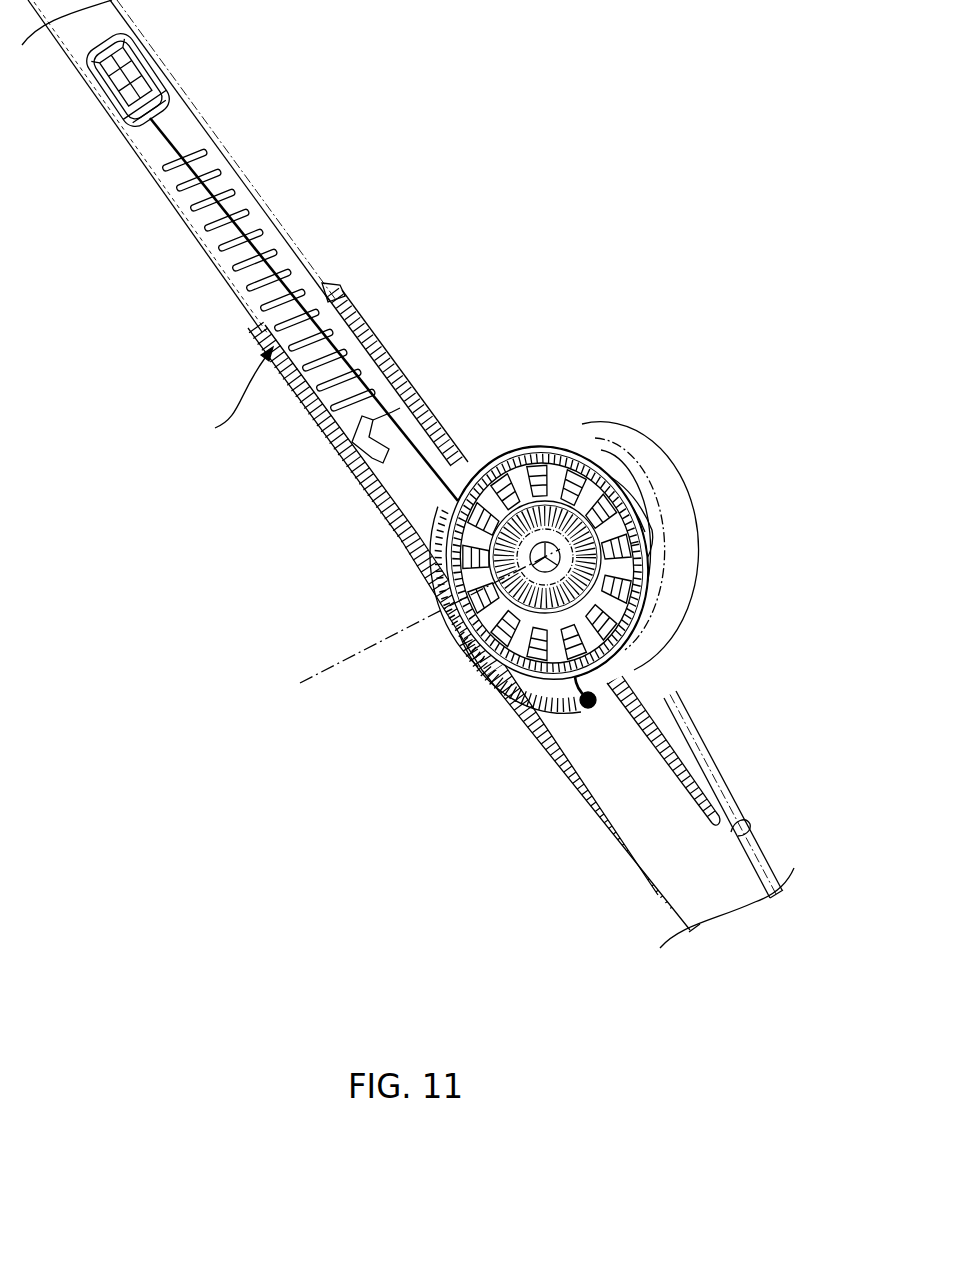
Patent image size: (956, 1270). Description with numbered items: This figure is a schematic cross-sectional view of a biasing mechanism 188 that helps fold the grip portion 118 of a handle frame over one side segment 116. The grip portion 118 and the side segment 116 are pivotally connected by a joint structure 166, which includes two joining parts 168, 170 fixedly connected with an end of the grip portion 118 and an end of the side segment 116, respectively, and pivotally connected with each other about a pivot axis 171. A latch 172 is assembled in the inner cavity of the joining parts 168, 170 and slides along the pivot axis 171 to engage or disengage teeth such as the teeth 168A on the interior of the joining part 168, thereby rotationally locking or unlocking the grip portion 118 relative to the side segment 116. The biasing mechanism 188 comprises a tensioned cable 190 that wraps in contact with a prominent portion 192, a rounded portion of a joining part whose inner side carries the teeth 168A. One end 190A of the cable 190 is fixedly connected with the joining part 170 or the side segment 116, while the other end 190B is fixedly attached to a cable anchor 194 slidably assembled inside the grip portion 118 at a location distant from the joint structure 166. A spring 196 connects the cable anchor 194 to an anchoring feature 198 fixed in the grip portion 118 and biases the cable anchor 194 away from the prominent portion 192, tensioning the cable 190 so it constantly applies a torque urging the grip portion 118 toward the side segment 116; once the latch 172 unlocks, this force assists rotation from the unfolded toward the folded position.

The side segment 116 is at (750, 858).
The grip portion 118 is at (217, 132).
The joint structure 166 is at (542, 371).
The joining part 168 is at (403, 380).
The teeth 168A is at (625, 530).
The joining part 170 is at (677, 725).
The pivot axis 171 is at (338, 668).
The latch 172 is at (513, 583).
The biasing mechanism 188 is at (225, 398).
The tensioned cable 190 is at (243, 217).
The end of cable 190A is at (579, 705).
The end of cable 190B is at (150, 122).
The prominent portion 192 is at (568, 446).
The cable anchor 194 is at (143, 70).
The spring 196 is at (182, 213).
The anchoring feature 198 is at (350, 434).